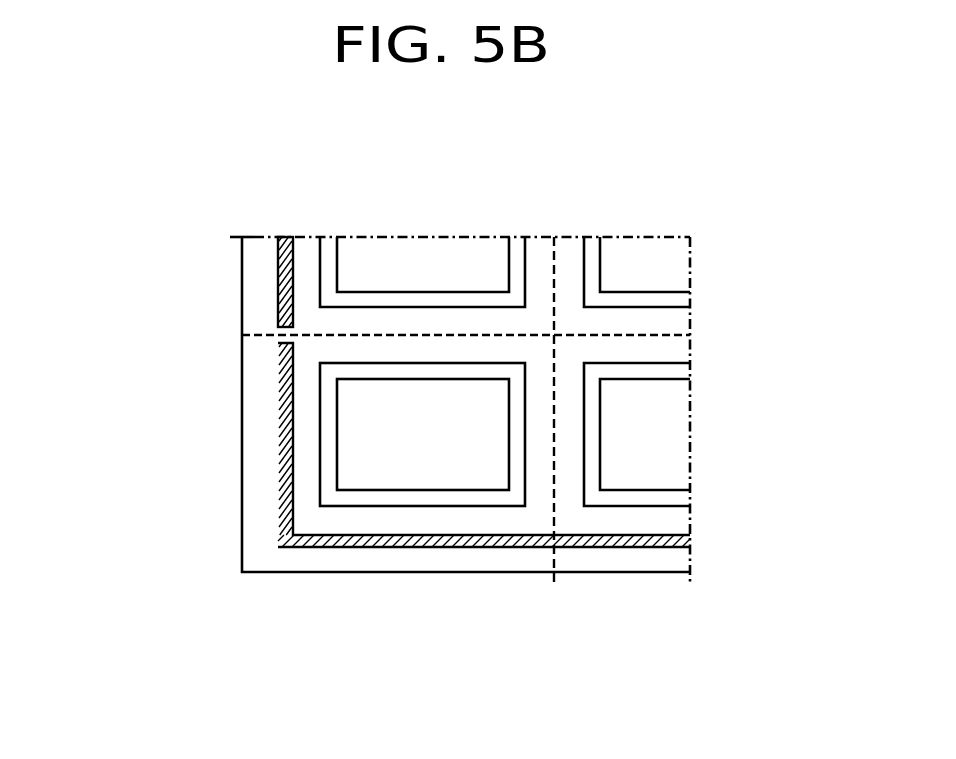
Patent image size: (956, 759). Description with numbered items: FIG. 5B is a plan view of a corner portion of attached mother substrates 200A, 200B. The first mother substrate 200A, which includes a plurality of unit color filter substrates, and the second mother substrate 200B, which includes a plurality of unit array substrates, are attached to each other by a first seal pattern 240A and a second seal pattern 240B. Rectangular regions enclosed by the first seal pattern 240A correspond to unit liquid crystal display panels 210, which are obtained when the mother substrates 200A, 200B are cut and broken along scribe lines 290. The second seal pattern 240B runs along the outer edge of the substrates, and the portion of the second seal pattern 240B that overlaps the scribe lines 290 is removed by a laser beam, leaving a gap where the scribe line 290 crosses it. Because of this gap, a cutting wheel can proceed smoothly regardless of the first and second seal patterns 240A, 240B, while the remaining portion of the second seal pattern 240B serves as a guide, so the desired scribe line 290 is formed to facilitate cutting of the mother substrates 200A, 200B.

The first mother substrate 200A is at (389, 411).
The second mother substrate 200B is at (242, 476).
The scribe line 290 is at (242, 335).
The second seal pattern 240B is at (347, 547).
The first seal pattern 240A is at (495, 508).
The unit liquid crystal display panel 210 is at (420, 491).